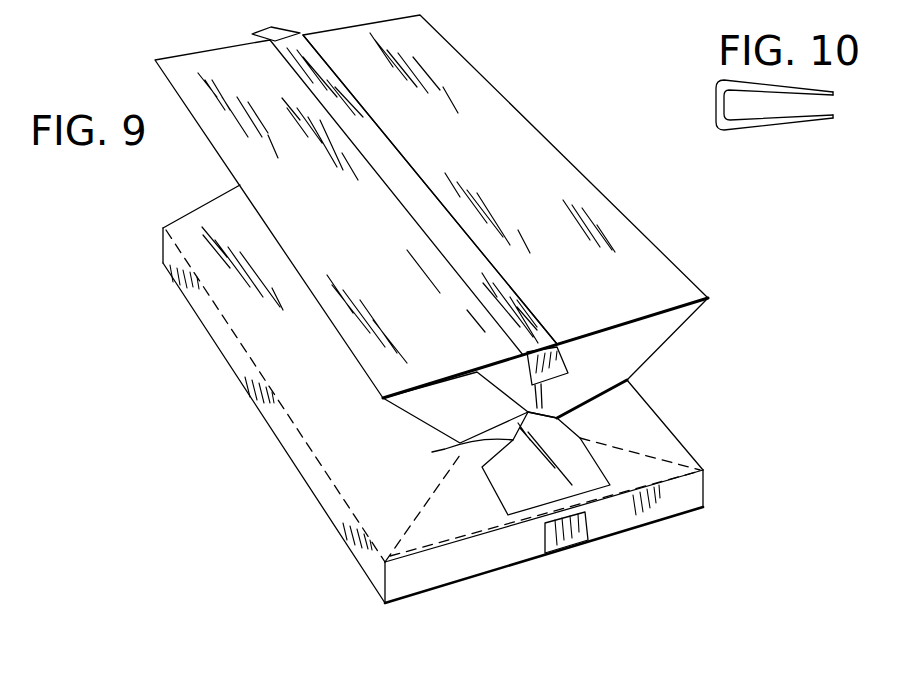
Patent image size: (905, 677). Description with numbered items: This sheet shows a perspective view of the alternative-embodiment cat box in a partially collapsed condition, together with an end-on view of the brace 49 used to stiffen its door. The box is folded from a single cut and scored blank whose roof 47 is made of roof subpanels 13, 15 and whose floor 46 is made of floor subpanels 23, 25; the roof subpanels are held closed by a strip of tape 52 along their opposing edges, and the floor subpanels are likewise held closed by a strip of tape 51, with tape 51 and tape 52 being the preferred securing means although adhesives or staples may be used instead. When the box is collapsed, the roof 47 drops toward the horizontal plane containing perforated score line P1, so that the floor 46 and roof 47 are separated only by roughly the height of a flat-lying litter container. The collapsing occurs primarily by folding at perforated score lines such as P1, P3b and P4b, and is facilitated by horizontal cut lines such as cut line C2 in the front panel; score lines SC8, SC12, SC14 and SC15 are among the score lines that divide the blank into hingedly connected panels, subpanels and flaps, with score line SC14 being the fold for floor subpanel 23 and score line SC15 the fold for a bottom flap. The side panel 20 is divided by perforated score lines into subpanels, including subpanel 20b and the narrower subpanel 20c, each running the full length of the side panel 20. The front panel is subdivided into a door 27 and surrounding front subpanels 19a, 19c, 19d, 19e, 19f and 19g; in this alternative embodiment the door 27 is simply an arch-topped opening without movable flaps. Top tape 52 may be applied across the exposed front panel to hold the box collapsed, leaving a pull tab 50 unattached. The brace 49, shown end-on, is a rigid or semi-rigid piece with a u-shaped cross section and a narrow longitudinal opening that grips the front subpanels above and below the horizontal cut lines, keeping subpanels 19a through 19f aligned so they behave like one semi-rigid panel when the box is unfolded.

In FIG. 9, the roof subpanel 13 is at (390, 251).
In FIG. 9, the roof subpanel 15 is at (545, 216).
In FIG. 9, the front subpanel 19a is at (490, 412).
In FIG. 9, the front subpanel 19c is at (646, 362).
In FIG. 9, the front subpanel 19d is at (647, 429).
In FIG. 9, the front subpanel 19e is at (497, 529).
In FIG. 9, the front subpanel 19f is at (460, 470).
In FIG. 9, the front subpanel 19g is at (523, 556).
In FIG. 9, the side panel 20 is at (368, 456).
In FIG. 9, the side panel subpanel 20b is at (376, 424).
In FIG. 9, the side panel subpanel 20c is at (243, 370).
In FIG. 9, the floor subpanel 23 is at (466, 582).
In FIG. 9, the floor subpanel 25 is at (643, 527).
In FIG. 9, the door 27 is at (616, 461).
In FIG. 9, the floor 46 is at (668, 519).
In FIG. 9, the roof 47 is at (222, 68).
In FIG. 10, the brace 49 is at (780, 130).
In FIG. 9, the pull tab 50 is at (273, 27).
In FIG. 9, the tape 51 is at (563, 540).
In FIG. 9, the tape 52 is at (512, 295).
In FIG. 9, the cut line C2 is at (456, 452).
In FIG. 9, the perforated score line P1 is at (285, 414).
In FIG. 9, the perforated score line P3b is at (664, 458).
In FIG. 9, the perforated score line P4b is at (440, 512).
In FIG. 9, the score line SC8 is at (703, 488).
In FIG. 9, the score line SC12 is at (163, 247).
In FIG. 9, the score line SC14 is at (292, 460).
In FIG. 9, the score line SC15 is at (627, 532).